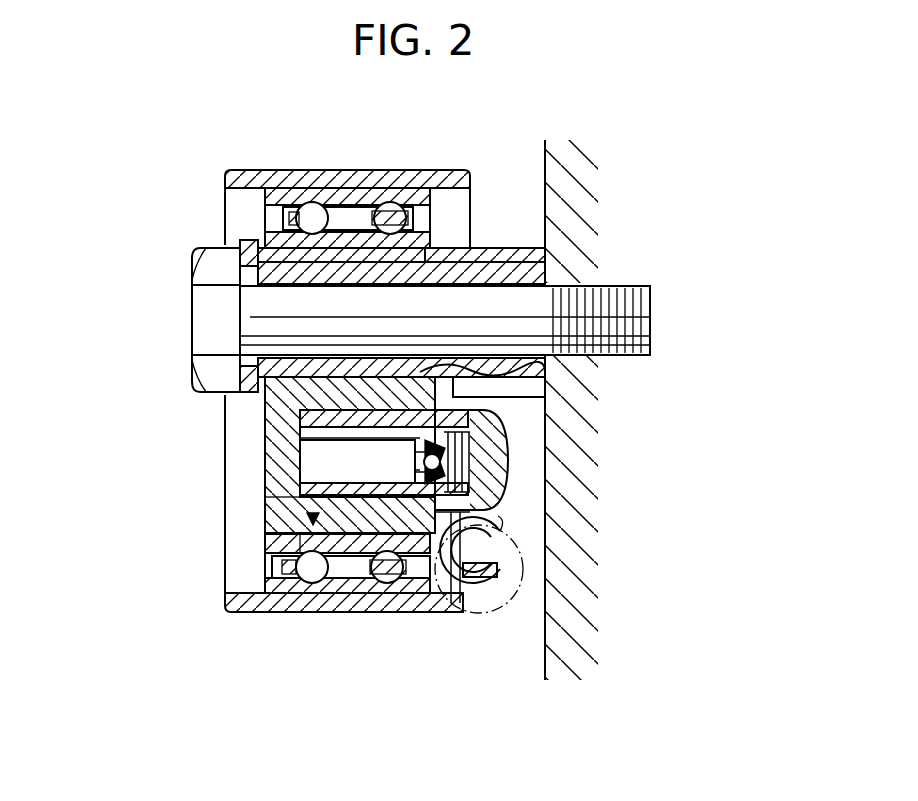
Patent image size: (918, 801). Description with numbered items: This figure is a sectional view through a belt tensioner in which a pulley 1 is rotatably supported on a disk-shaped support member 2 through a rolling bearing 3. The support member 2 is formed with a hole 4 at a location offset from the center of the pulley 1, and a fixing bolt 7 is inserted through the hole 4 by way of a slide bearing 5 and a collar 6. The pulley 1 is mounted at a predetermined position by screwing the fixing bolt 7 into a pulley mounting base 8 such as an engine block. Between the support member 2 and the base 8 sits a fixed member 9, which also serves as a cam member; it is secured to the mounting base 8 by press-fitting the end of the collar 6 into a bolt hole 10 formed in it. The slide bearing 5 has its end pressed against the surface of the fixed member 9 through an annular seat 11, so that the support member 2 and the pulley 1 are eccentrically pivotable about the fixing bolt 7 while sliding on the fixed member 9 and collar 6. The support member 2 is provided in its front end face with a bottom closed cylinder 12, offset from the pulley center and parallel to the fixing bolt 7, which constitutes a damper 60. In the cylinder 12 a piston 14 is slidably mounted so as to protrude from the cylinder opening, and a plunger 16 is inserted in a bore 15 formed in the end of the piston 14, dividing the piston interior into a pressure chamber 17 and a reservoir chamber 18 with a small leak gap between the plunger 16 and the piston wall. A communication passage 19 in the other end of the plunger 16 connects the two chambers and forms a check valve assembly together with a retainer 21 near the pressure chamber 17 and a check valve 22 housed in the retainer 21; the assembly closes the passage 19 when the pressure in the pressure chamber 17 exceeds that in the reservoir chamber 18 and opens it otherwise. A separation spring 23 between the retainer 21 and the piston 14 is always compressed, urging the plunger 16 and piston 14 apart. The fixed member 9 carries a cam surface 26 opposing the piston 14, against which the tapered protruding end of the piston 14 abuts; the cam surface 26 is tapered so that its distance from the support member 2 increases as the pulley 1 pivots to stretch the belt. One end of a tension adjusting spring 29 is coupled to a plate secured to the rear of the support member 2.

The pulley 1 is at (258, 183).
The support member 2 is at (280, 430).
The rolling bearing 3 is at (268, 218).
The hole 4 is at (268, 384).
The slide bearing 5 is at (338, 250).
The collar 6 is at (247, 265).
The fixing bolt 7 is at (218, 320).
The pulley mounting base 8 is at (563, 162).
The fixed member 9 is at (508, 262).
The bolt hole 10 is at (600, 283).
The annular seat 11 is at (447, 200).
The bottom closed cylinder 12 is at (300, 505).
The piston 14 is at (500, 453).
The bore 15 is at (350, 447).
The plunger 16 is at (312, 583).
The pressure chamber 17 is at (475, 480).
The reservoir chamber 18 is at (322, 465).
The communication passage 19 is at (345, 562).
The retainer 21 is at (447, 607).
The check valve 22 is at (391, 590).
The separation spring 23 is at (487, 437).
The cam surface 26 is at (503, 540).
The tension adjusting spring 29 is at (502, 603).
The damper 60 is at (260, 547).